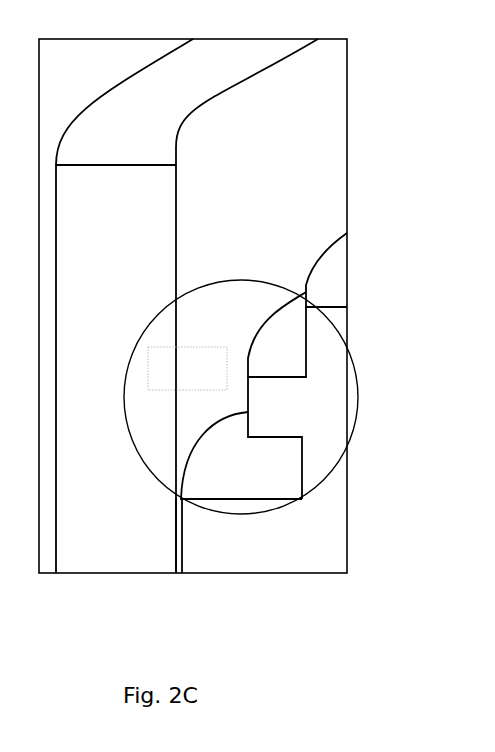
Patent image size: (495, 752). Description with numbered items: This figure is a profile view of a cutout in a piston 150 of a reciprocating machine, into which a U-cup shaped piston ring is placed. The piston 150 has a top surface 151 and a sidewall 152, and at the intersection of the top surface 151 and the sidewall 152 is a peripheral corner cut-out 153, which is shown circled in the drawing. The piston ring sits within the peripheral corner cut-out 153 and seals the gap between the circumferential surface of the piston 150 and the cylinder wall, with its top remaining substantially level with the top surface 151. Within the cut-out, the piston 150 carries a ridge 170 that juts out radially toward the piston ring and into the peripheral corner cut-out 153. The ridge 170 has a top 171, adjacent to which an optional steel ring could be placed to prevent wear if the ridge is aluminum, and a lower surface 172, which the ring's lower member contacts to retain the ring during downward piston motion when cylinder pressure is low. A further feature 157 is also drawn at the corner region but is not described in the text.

The piston 150 is at (289, 558).
The top surface 151 is at (338, 282).
The sidewall 152 is at (183, 540).
The peripheral corner cut-out 153 is at (355, 365).
The protrusion region 157 is at (308, 268).
The ridge 170 is at (270, 417).
The top of the ridge 171 is at (277, 332).
The lower surface of the ridge 172 is at (302, 499).